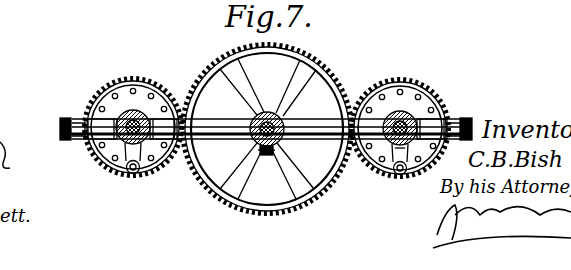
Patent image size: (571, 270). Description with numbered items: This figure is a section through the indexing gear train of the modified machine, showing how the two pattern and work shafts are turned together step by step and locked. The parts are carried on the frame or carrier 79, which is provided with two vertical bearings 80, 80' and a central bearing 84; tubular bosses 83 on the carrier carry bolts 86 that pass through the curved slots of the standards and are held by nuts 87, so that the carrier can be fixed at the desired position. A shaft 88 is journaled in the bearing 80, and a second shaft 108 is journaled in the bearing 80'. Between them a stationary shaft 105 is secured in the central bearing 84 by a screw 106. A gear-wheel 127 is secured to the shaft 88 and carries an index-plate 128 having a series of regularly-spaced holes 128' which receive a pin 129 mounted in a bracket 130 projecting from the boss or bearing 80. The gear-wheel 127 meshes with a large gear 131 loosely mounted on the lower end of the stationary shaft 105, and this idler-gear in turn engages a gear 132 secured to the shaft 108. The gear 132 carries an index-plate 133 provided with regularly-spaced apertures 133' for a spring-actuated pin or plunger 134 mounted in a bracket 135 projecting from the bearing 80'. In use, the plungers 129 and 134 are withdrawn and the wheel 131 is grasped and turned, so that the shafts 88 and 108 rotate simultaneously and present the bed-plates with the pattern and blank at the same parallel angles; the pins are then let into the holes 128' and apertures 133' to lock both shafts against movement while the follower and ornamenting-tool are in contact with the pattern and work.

The frame or carrier 79 is at (235, 140).
The vertical bearing 80 is at (255, 162).
The vertical bearing 80' is at (441, 146).
The tubular boss 83 is at (96, 119).
The central bearing 84 is at (267, 144).
The bolt 86 is at (72, 143).
The nut 87 is at (62, 122).
The shaft 88 is at (108, 163).
The shaft 105 is at (286, 117).
The screw 106 is at (266, 156).
The shaft 108 is at (383, 177).
The gear-wheel 127 is at (162, 173).
The index-plate 128 is at (158, 196).
The hole 128' is at (76, 172).
The pin 129 is at (128, 180).
The bracket 130 is at (132, 180).
The large gear 131 is at (280, 216).
The gear 132 is at (408, 90).
The index-plate 133 is at (423, 91).
The aperture 133' is at (442, 120).
The spring-actuated pin or plunger 134 is at (402, 180).
The bracket 135 is at (418, 178).